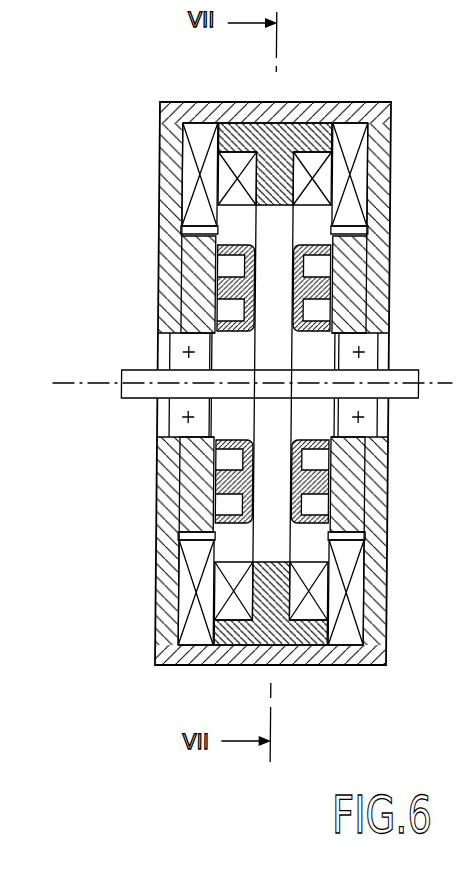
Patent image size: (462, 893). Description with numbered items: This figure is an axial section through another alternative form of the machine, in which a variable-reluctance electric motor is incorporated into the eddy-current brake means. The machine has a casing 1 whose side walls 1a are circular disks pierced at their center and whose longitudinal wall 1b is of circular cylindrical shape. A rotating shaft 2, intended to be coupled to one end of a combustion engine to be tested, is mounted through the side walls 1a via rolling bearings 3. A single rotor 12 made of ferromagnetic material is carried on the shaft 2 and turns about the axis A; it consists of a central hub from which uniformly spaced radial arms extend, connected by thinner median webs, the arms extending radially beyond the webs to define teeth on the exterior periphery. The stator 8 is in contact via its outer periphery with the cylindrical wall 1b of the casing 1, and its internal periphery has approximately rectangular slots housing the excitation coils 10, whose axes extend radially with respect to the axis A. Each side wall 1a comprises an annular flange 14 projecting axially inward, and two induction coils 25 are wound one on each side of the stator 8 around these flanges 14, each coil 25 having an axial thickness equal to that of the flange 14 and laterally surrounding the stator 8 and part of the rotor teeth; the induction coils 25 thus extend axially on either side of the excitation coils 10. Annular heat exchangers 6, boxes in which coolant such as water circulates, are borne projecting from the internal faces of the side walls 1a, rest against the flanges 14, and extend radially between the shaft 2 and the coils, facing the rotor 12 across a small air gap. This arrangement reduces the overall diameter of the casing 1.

The casing 1 is at (157, 104).
The side walls 1a is at (172, 199).
The longitudinal wall 1b is at (331, 108).
The rotating shaft 2 is at (400, 392).
The rolling bearings 3 is at (182, 347).
The annular heat exchanger 6 is at (310, 282).
The stator 8 is at (289, 124).
The excitation coils 10 is at (323, 172).
The rotor 12 is at (276, 481).
The annular flange 14 is at (200, 240).
The induction coils 25 is at (190, 173).
The axis A is at (80, 380).